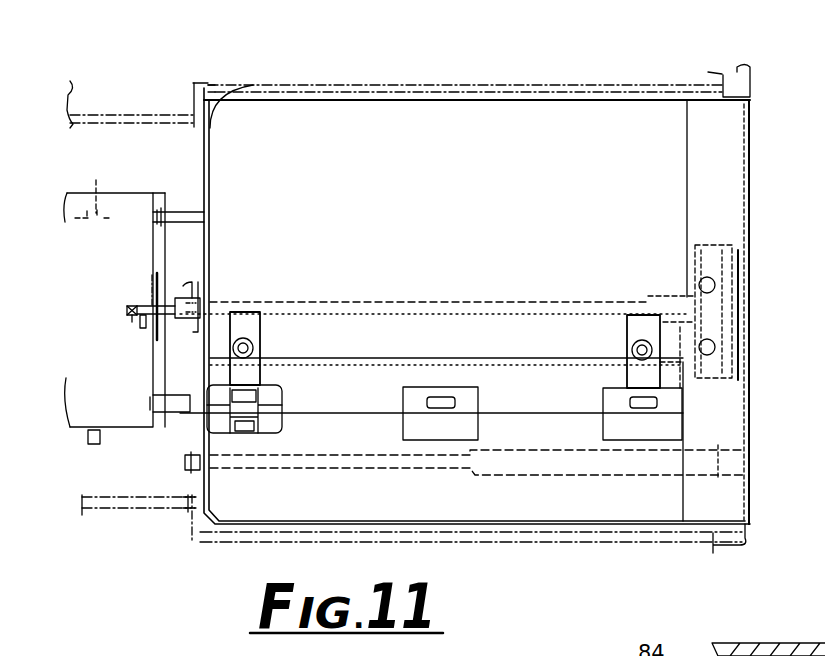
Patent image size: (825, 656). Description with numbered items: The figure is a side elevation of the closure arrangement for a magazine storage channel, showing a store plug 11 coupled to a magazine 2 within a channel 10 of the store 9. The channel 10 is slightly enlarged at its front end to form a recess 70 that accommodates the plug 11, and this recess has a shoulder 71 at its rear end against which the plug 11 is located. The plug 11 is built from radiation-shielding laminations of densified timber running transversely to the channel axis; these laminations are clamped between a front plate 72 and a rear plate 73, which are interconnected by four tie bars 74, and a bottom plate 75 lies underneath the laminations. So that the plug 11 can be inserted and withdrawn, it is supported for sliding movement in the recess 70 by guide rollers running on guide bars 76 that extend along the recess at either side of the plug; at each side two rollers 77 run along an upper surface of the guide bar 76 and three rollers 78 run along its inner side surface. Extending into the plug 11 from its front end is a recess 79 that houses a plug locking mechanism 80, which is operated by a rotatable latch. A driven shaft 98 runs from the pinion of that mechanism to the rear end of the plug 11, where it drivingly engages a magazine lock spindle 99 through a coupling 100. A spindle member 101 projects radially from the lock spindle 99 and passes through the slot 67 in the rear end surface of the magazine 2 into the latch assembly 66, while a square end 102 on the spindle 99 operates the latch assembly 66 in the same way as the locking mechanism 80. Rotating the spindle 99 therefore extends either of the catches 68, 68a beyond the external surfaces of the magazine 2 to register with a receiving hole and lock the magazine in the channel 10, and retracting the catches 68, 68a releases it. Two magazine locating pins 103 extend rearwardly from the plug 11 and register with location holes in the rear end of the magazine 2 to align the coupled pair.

The magazine 2 is at (132, 186).
The store 9 is at (404, 70).
The channel 10 is at (167, 483).
The store plug 11 is at (565, 153).
The latch assembly 66 is at (130, 430).
The slot 67 is at (157, 303).
The catch 68 is at (93, 443).
The catch 68a is at (96, 180).
The recess 70 is at (447, 90).
The shoulder 71 is at (204, 540).
The front plate 72 is at (750, 128).
The rear plate 73 is at (253, 83).
The tie bar 74 is at (487, 470).
The bottom plate 75 is at (423, 522).
The guide bar 76 is at (520, 400).
The roller 77 is at (245, 348).
The roller 78 is at (630, 403).
The recess 79 is at (697, 247).
The plug locking mechanism 80 is at (750, 298).
The driven shaft 98 is at (413, 302).
The magazine lock spindle 99 is at (165, 275).
The coupling 100 is at (190, 282).
The spindle member 101 is at (143, 330).
The square end 102 is at (133, 320).
The magazine locating pin 103 is at (197, 220).